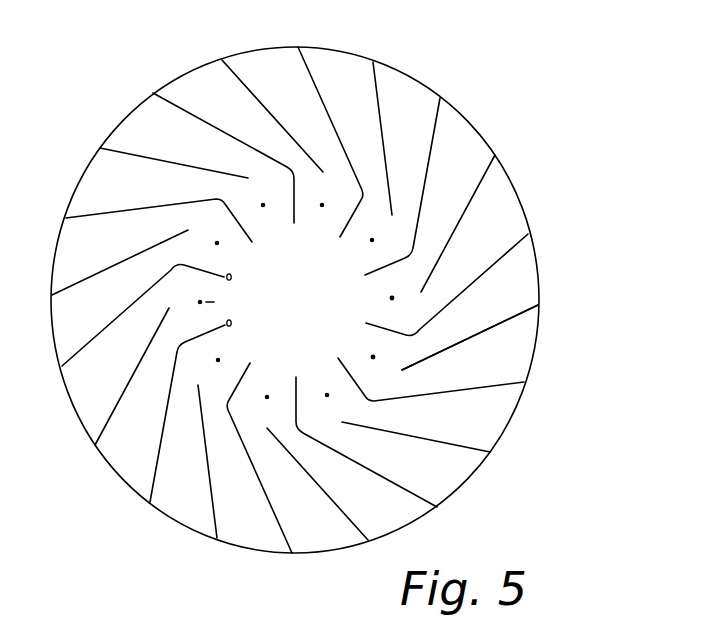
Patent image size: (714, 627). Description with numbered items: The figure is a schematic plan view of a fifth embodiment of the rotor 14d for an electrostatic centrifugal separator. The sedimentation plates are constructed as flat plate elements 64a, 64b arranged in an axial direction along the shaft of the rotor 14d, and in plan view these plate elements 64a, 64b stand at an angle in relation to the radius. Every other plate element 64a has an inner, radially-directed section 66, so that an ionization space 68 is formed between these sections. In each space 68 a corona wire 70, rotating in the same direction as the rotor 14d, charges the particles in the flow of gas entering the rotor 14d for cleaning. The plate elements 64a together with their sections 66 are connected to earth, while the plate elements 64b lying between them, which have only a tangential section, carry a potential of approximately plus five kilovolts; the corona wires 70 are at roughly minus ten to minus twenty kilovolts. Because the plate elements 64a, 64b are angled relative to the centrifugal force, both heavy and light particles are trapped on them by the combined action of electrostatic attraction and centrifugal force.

The rotor 14d is at (538, 120).
The plate element 64a is at (520, 242).
The plate element 64b is at (531, 306).
The inner, radially-directed section 66 is at (364, 200).
The ionization space 68 is at (372, 287).
The corona wire 70 is at (391, 298).